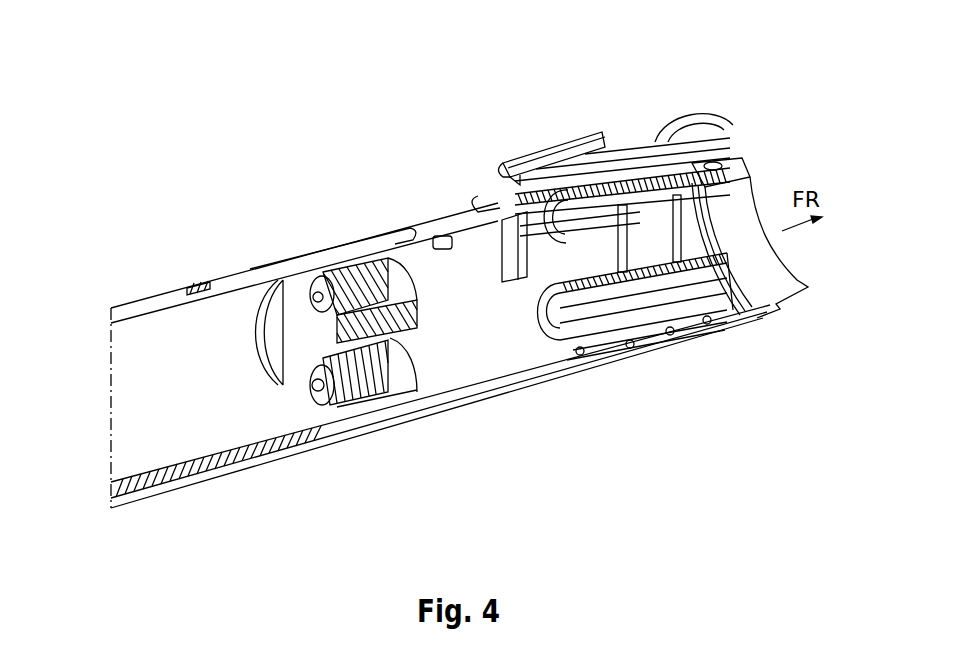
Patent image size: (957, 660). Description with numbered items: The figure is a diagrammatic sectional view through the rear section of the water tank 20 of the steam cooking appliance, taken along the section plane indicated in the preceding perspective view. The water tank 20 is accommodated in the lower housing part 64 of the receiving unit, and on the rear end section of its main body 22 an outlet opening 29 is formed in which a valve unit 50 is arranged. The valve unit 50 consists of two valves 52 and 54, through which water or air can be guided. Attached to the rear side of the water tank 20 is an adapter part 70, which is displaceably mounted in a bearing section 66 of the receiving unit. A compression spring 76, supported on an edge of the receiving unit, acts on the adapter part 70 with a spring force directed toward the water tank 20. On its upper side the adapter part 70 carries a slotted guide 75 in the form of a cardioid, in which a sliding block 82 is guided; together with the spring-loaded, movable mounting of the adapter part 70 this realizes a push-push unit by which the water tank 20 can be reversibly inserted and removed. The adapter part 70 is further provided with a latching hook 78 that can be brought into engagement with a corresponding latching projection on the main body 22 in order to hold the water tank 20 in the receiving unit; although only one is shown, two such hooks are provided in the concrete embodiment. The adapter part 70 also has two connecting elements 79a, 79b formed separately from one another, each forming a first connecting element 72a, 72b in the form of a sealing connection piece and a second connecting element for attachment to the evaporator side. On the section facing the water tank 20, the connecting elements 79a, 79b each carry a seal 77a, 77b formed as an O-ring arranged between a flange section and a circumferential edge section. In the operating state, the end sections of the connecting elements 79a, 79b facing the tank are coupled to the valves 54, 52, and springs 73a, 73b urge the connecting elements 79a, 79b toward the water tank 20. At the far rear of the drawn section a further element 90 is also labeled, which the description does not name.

The water tank 20 is at (133, 280).
The main body 22 is at (232, 282).
The outlet opening 29 is at (428, 292).
The valve unit 50 is at (512, 312).
The valve 52 is at (340, 380).
The valve 54 is at (357, 280).
The lower housing part 64 is at (430, 374).
The bearing section 66 is at (693, 340).
The adapter part 70 is at (572, 130).
The first connecting element 72a is at (500, 165).
The first connecting element 72b is at (577, 300).
The spring 73a is at (600, 200).
The spring 73b is at (620, 290).
The slotted guide 75 is at (513, 168).
The compression spring 76 is at (752, 308).
The seal 77a is at (520, 284).
The seal 77b is at (515, 284).
The latching hook 78 is at (508, 240).
The connecting element 79a is at (663, 197).
The connecting element 79b is at (657, 290).
The sliding block 82 is at (537, 150).
The bracket 90 is at (745, 140).